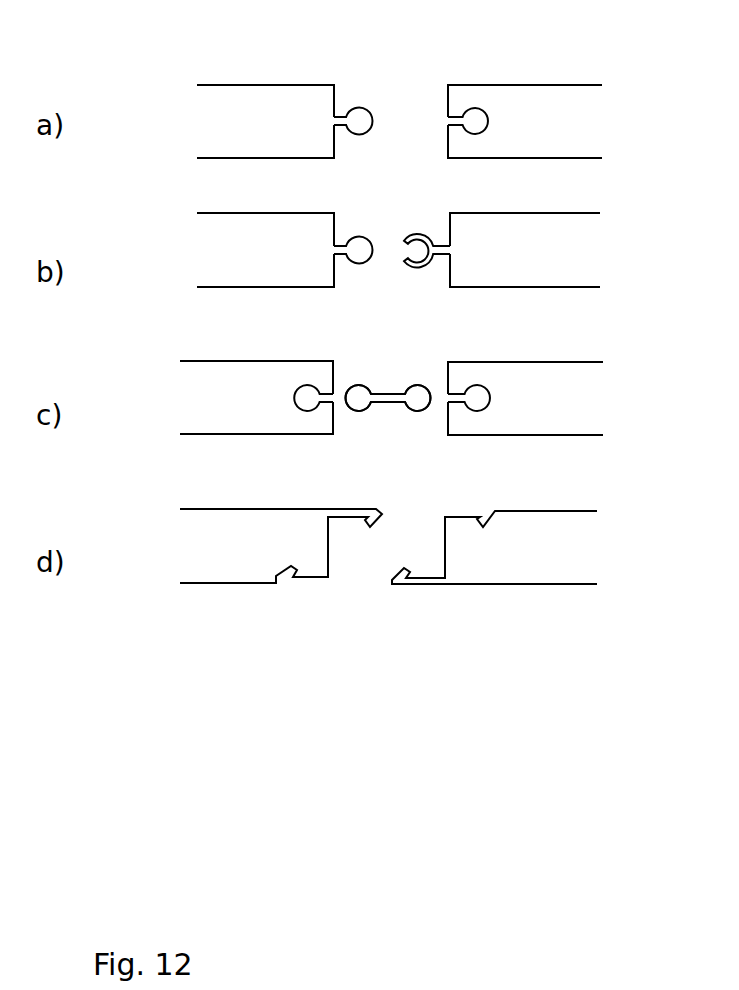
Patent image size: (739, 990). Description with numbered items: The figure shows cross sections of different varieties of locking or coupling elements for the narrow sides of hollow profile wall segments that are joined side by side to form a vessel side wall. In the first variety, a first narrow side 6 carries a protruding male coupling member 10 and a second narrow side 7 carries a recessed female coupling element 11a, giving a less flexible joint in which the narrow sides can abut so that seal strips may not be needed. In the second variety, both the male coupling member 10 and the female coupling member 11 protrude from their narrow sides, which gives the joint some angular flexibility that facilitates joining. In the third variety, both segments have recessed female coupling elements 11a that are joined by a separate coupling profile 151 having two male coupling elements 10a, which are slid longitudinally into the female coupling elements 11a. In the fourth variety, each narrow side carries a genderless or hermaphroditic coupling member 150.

The first narrow side 6 is at (334, 85).
The second narrow side 7 is at (447, 93).
The male coupling member 10 is at (358, 103).
The female coupling member 11 is at (418, 232).
The recessed female coupling element 11a is at (483, 110).
The separate coupling profile 151 is at (393, 392).
The male coupling element 10a is at (420, 407).
The genderless coupling member 150 is at (418, 595).